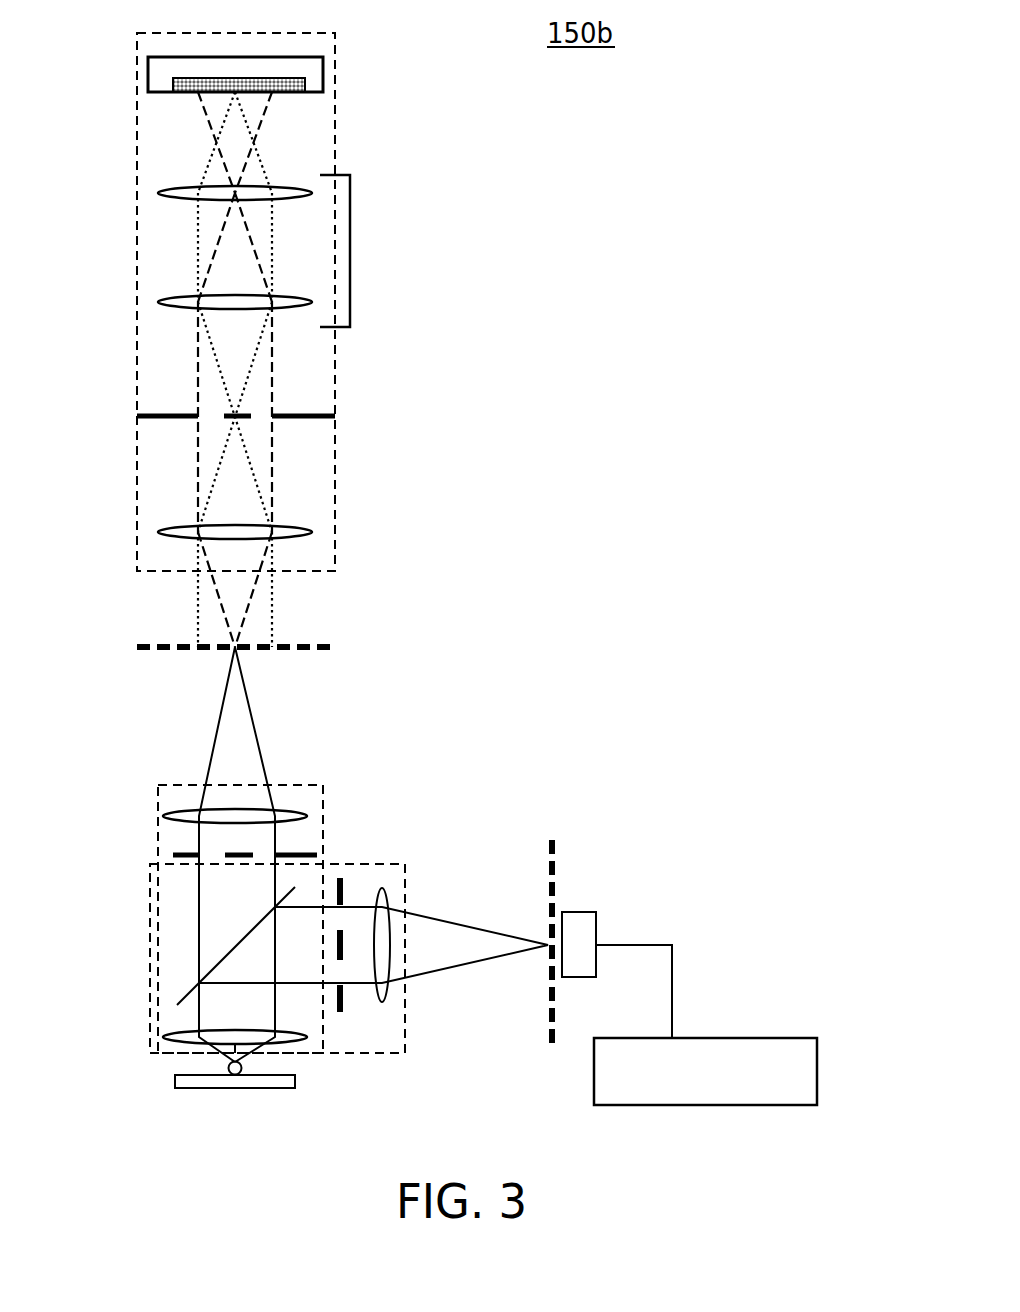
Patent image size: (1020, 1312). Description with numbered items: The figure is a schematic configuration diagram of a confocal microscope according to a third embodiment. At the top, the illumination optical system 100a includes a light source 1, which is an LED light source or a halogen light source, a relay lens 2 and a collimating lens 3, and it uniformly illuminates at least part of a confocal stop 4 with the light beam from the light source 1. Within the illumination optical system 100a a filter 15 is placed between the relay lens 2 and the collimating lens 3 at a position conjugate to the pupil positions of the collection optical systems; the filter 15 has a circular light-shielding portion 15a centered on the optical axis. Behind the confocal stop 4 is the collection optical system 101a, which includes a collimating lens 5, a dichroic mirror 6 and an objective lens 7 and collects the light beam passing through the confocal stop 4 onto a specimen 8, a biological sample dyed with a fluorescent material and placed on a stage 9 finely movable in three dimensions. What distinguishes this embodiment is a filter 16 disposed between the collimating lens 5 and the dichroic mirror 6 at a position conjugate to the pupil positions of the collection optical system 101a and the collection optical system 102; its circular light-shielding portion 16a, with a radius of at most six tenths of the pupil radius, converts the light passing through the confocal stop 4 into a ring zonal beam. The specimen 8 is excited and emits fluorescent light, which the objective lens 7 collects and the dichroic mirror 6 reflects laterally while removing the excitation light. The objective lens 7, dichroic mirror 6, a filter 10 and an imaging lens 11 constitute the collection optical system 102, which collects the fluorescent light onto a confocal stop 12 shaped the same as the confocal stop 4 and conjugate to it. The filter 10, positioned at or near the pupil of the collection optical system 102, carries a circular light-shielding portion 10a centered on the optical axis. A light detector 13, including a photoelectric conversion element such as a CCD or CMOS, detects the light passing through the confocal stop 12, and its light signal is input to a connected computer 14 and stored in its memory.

The illumination optical system 100a is at (335, 52).
The light source 1 is at (320, 92).
The relay lens 2 is at (350, 238).
The collimating lens 3 is at (183, 528).
The confocal stop 4 is at (323, 645).
The collimating lens 5 is at (182, 822).
The dichroic mirror 6 is at (192, 990).
The objective lens 7 is at (178, 1031).
The specimen 8 is at (242, 1064).
The stage 9 is at (275, 1088).
The filter 10 is at (340, 878).
The light-shielding portion 10a is at (343, 940).
The imaging lens 11 is at (385, 893).
The confocal stop 12 is at (553, 840).
The light detector 13 is at (590, 910).
The computer 14 is at (763, 1038).
The filter 15 is at (168, 411).
The light-shielding portion 15a is at (245, 412).
The filter 16 is at (182, 857).
The light-shielding portion 16a is at (233, 860).
The collection optical system 101a is at (185, 785).
The collection optical system 102 is at (406, 1010).